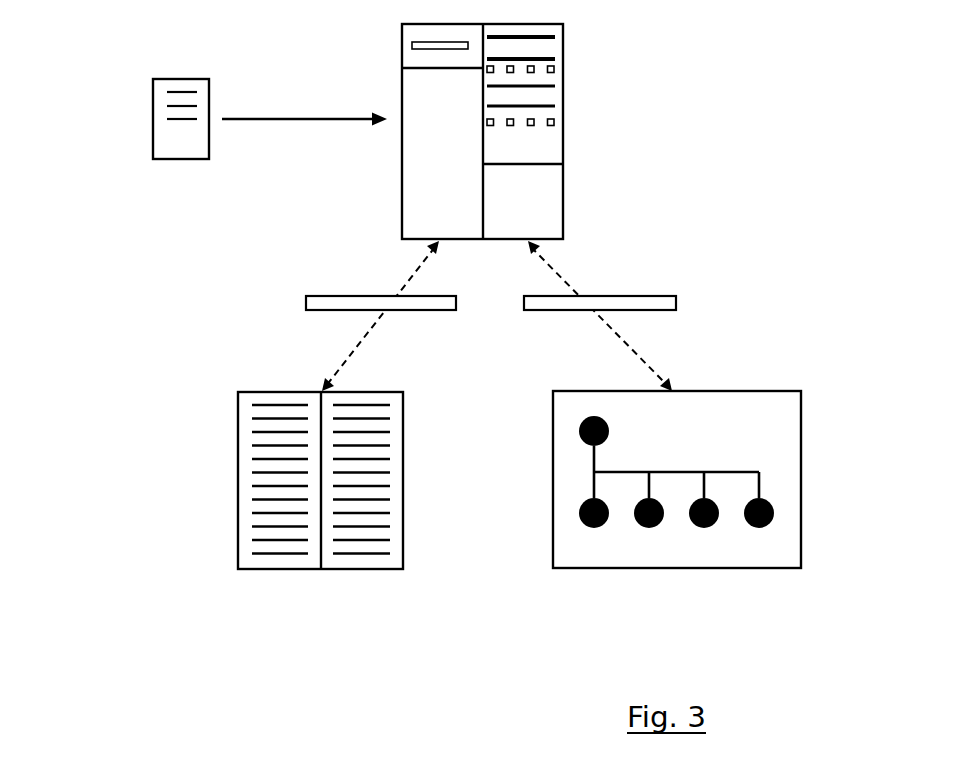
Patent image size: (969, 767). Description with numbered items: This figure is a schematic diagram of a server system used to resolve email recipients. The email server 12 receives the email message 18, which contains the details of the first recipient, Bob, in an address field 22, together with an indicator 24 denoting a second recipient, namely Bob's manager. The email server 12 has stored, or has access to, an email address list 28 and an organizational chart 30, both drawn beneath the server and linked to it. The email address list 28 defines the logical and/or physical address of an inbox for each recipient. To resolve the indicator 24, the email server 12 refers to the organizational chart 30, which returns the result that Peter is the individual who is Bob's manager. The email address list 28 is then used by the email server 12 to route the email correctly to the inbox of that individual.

The email server 12 is at (563, 49).
The email message 18 is at (153, 133).
The address field 22 is at (306, 311).
The indicator 24 is at (676, 296).
The email address list 28 is at (238, 528).
The organizational chart 30 is at (801, 430).